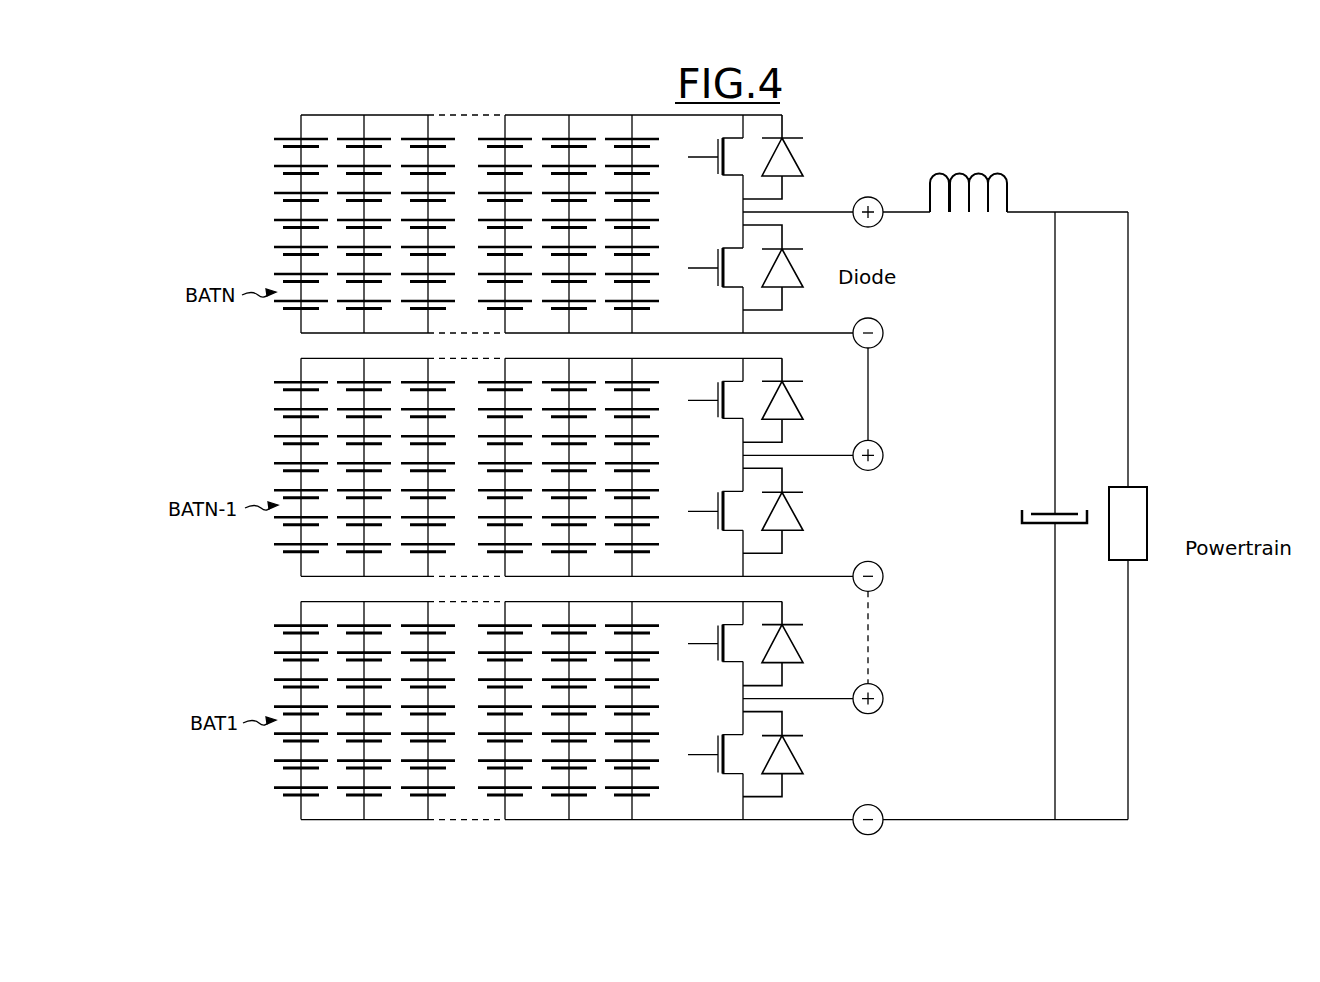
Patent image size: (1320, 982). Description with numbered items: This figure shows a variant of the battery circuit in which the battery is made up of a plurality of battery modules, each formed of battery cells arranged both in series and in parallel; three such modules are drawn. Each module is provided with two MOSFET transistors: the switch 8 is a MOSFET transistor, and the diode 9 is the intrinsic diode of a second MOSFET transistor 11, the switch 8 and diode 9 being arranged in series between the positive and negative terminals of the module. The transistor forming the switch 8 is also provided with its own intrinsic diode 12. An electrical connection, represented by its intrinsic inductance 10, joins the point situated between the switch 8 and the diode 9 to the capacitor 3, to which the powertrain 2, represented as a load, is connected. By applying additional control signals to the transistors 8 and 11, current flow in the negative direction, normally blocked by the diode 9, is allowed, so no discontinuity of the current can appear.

The powertrain 2 is at (1150, 520).
The capacitor 3 is at (1012, 513).
The switch 8 is at (721, 177).
The diode 9 is at (803, 263).
The intrinsic inductance 10 is at (980, 172).
The MOSFET transistor 11 is at (722, 248).
The intrinsic diode 12 is at (803, 152).